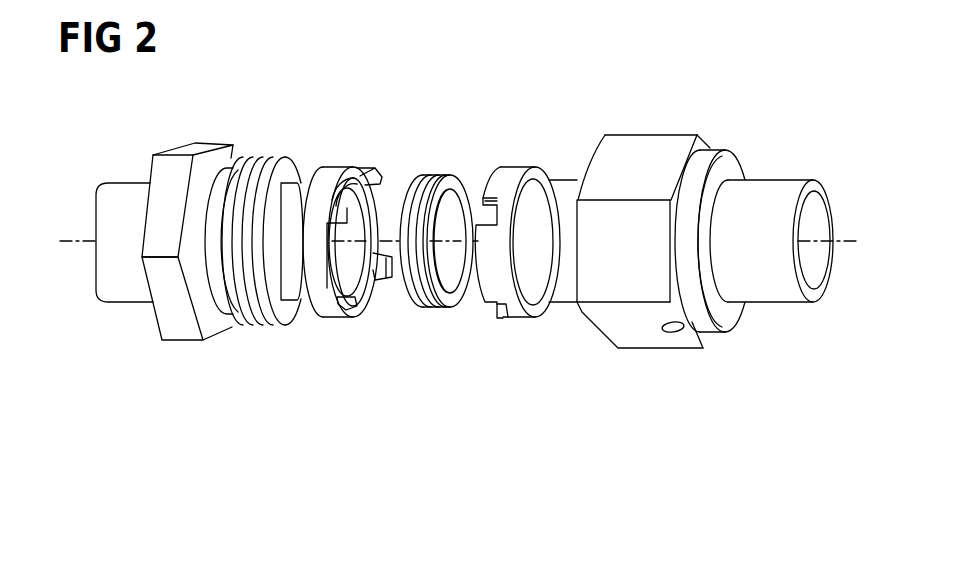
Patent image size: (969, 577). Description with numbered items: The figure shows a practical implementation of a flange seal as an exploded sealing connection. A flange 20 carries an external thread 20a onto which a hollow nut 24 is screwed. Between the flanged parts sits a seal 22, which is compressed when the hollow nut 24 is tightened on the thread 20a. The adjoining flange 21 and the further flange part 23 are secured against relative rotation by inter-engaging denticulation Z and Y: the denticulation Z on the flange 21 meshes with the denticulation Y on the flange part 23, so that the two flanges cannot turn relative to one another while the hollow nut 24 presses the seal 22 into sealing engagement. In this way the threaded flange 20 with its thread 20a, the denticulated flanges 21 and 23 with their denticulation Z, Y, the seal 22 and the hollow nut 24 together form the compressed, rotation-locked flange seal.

The flange 20 is at (218, 327).
The thread 20a is at (278, 157).
The flange 21 is at (304, 288).
The denticulation Z is at (372, 172).
The seal 22 is at (422, 307).
The flange 23 is at (495, 288).
The denticulation Y is at (485, 207).
The hollow nut 24 is at (605, 325).